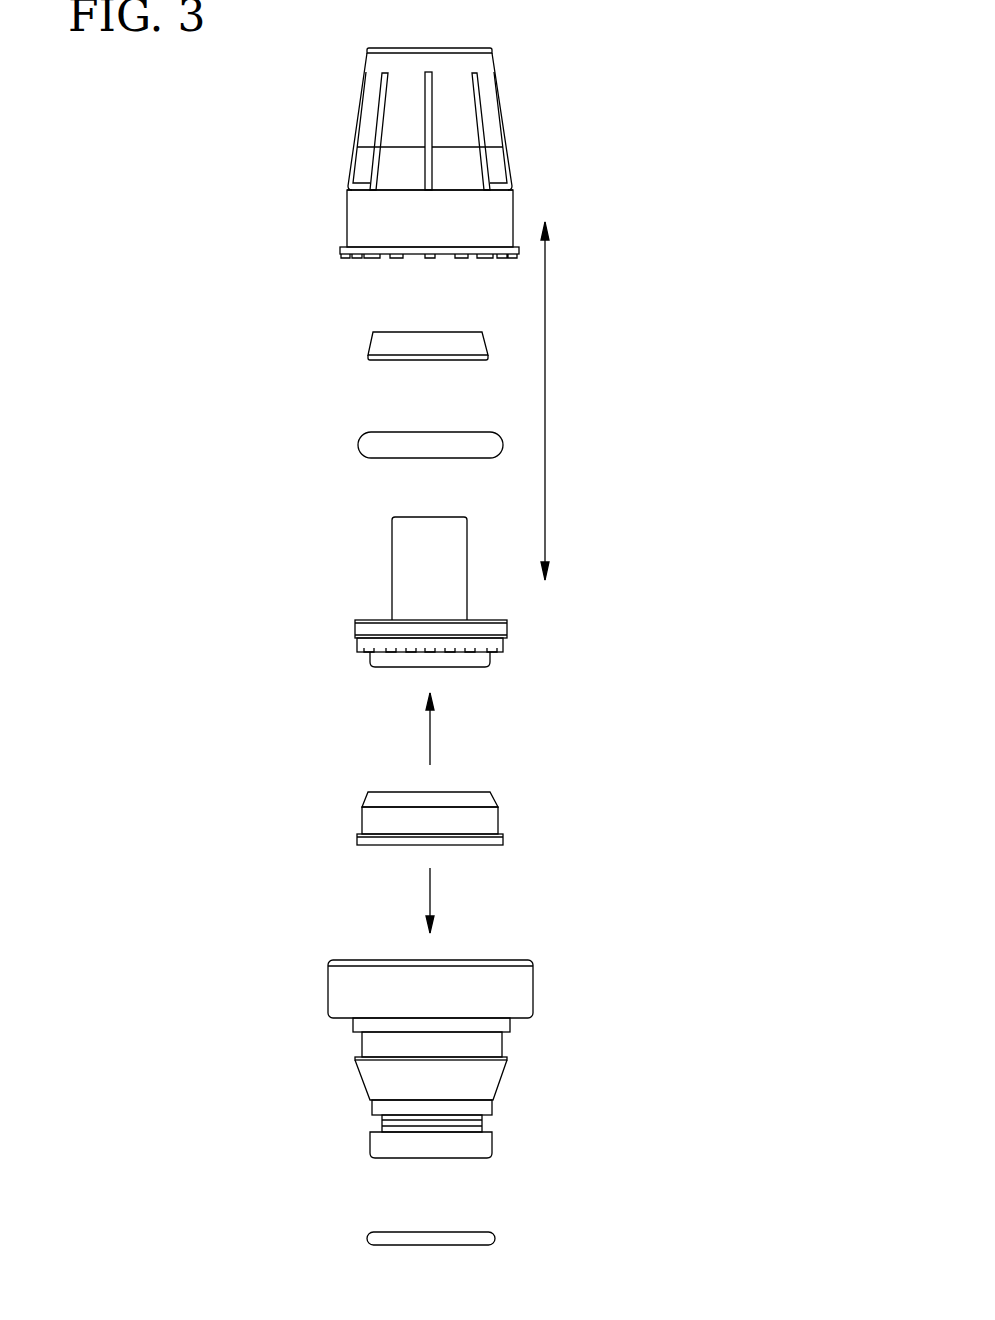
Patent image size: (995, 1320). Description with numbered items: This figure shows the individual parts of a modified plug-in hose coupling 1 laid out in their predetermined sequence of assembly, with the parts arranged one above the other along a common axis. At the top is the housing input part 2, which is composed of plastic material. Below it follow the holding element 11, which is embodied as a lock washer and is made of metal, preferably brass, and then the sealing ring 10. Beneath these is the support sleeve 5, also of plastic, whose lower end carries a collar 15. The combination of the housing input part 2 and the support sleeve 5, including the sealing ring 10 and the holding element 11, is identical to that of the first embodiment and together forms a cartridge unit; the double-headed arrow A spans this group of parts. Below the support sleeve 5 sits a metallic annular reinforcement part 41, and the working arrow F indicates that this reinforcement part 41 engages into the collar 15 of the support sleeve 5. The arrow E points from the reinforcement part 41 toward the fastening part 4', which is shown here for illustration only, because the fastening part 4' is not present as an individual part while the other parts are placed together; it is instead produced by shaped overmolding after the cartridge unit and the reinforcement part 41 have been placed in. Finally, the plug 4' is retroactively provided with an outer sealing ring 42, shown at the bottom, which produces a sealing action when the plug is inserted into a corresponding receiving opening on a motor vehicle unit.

The plug-in hose coupling 1 is at (594, 96).
The housing input part 2 is at (370, 150).
The holding element 11 is at (385, 343).
The sealing ring 10 is at (372, 446).
The support sleeve 5 is at (401, 566).
The collar 15 is at (365, 629).
The annular reinforcement part 41 is at (370, 820).
The fastening part 4' is at (387, 1059).
The outer sealing ring 42 is at (380, 1238).
The direction A is at (545, 375).
The direction E is at (430, 893).
The working arrow F is at (430, 742).